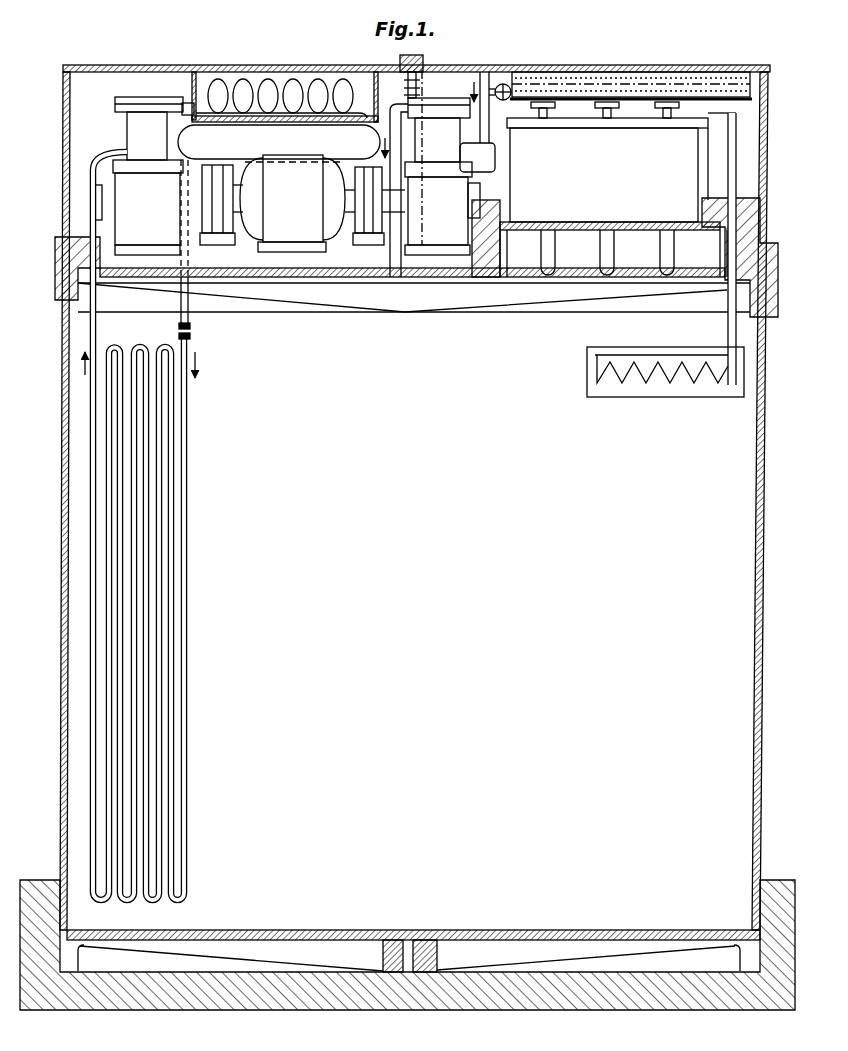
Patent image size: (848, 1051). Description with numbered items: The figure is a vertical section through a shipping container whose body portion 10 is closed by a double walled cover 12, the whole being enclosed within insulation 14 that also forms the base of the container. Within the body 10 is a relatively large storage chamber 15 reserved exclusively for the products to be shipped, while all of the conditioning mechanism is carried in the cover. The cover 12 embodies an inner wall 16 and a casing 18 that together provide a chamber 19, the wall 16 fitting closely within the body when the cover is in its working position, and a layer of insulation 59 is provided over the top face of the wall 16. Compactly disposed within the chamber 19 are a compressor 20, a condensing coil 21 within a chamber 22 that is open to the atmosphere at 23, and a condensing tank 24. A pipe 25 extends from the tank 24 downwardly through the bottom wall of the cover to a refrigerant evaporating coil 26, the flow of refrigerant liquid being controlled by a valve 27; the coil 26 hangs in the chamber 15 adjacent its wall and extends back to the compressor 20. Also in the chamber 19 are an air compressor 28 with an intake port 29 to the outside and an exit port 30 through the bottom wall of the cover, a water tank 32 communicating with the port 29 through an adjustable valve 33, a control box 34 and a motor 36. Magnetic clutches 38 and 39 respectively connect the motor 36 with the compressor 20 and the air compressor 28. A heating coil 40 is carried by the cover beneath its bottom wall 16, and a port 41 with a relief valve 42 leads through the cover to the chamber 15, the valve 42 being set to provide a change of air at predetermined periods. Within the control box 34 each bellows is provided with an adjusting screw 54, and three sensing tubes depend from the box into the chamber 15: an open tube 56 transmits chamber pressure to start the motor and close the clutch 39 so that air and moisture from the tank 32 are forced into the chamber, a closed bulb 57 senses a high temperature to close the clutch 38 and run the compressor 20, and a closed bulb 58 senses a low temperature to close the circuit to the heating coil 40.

The body portion 10 is at (60, 521).
The double walled cover 12 is at (60, 143).
The insulation 14 is at (48, 985).
The storage chamber 15 is at (413, 626).
The inner wall 16 is at (325, 278).
The casing 18 is at (64, 88).
The chamber 19 is at (149, 84).
The compressor 20 is at (143, 176).
The condensing coil 21 is at (294, 78).
The chamber 22 is at (334, 82).
The opening to the atmosphere 23 is at (279, 70).
The condensing tank 24 is at (279, 142).
The pipe 25 is at (189, 306).
The refrigerant evaporating coil 26 is at (188, 512).
The valve 27 is at (192, 342).
The air compressor 28 is at (442, 162).
The intake port 29 is at (487, 72).
The exit port 30 is at (398, 278).
The water tank 32 is at (636, 82).
The adjustable valve 33 is at (510, 86).
The control box 34 is at (618, 189).
The motor 36 is at (294, 203).
The magnetic clutch 38 is at (214, 233).
The magnetic clutch 39 is at (365, 246).
The heating coil 40 is at (658, 386).
The port 41 is at (417, 98).
The relief valve 42 is at (424, 62).
The adjusting screw 54 is at (668, 101).
The open tube 56 is at (556, 250).
The closed tube or bulb 57 is at (614, 250).
The closed tube or bulb 58 is at (674, 250).
The insulation layer 59 is at (80, 246).